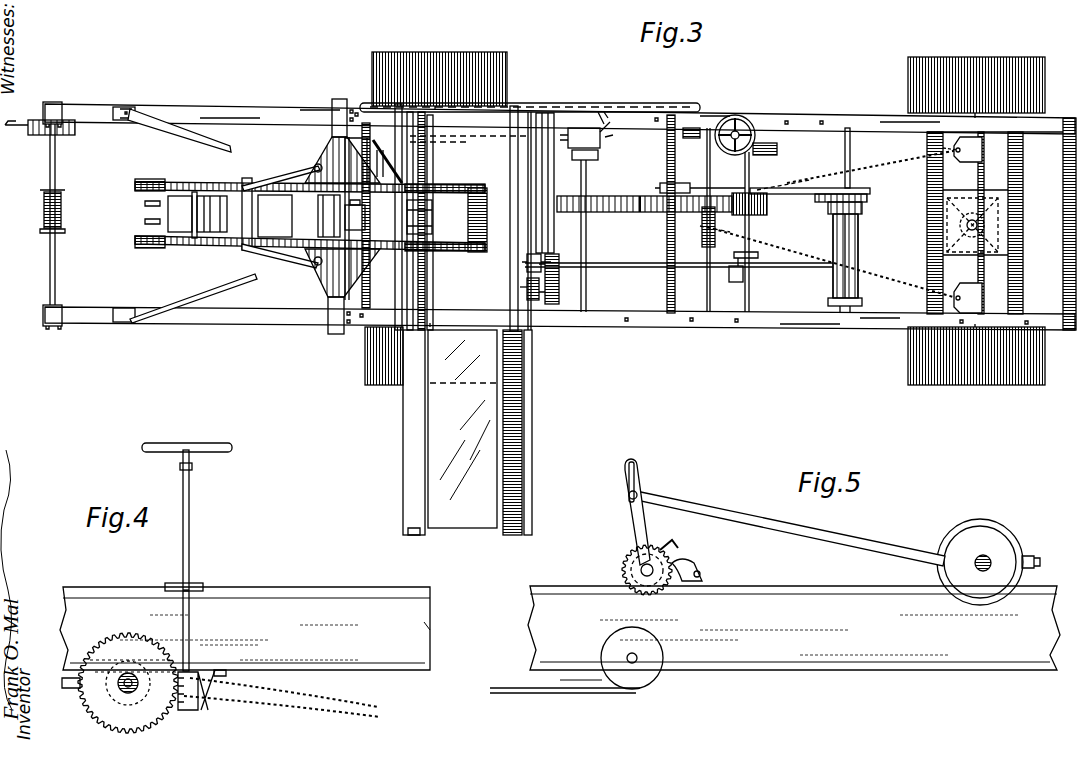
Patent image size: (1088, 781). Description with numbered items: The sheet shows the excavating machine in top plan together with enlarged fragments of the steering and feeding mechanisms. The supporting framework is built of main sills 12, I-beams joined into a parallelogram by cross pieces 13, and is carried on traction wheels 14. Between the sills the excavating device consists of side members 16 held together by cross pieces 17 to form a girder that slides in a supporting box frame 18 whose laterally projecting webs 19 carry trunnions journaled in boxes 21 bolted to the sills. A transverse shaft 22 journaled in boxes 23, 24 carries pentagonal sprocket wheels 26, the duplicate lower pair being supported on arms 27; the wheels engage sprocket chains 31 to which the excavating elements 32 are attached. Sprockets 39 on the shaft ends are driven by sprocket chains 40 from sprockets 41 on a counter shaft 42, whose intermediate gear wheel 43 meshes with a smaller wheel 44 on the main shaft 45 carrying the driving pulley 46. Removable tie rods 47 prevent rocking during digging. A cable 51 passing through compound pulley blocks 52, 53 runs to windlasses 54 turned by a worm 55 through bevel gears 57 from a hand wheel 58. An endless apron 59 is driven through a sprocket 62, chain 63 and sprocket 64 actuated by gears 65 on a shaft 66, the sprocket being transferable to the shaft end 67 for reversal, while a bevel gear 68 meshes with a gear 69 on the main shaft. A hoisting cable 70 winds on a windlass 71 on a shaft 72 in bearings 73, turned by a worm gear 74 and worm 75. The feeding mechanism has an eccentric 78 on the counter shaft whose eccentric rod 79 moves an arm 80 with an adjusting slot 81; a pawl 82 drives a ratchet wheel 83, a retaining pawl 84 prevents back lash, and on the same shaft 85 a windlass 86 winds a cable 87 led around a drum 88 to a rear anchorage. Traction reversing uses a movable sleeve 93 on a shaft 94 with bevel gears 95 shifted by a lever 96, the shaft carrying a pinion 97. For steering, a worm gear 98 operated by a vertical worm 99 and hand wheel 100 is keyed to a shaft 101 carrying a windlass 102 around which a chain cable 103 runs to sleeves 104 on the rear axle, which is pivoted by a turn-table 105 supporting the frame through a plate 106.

In FIG. 3, the main sills 12 is at (228, 107).
In FIG. 4, the main sills 12 is at (338, 598).
In FIG. 5, the main sills 12 is at (838, 594).
In FIG. 3, the cross pieces 13 is at (556, 220).
In FIG. 3, the traction wheels 14 is at (438, 52).
In FIG. 3, the side members 16 is at (180, 214).
In FIG. 3, the cross pieces 17 is at (212, 214).
In FIG. 3, the supporting box or frame 18 is at (275, 216).
In FIG. 3, the laterally projecting webs 19 is at (325, 150).
In FIG. 3, the boxes 21 is at (332, 101).
In FIG. 3, the transverse shaft 22 is at (422, 146).
In FIG. 3, the boxes 23 is at (440, 136).
In FIG. 3, the boxes 24 is at (448, 271).
In FIG. 3, the pentagonal sprocket wheels 26 is at (148, 179).
In FIG. 3, the arms 27 is at (145, 205).
In FIG. 3, the sprocket chains 31 is at (240, 182).
In FIG. 3, the excavating elements 32 is at (246, 250).
In FIG. 3, the sprockets 39 is at (405, 104).
In FIG. 3, the sprocket chains 40 is at (546, 104).
In FIG. 3, the sprockets 41 is at (690, 104).
In FIG. 3, the counter shaft 42 is at (668, 243).
In FIG. 5, the counter shaft 42 is at (977, 570).
In FIG. 3, the intermediate gear wheel 43 is at (648, 212).
In FIG. 3, the smaller wheel 44 is at (768, 214).
In FIG. 3, the main shaft 45 is at (760, 286).
In FIG. 3, the driving pulley 46 is at (776, 154).
In FIG. 3, the tie rods 47 is at (190, 134).
In FIG. 3, the cable 51 is at (280, 176).
In FIG. 3, the compound pulley block 52 is at (314, 167).
In FIG. 3, the compound pulley block 53 is at (235, 182).
In FIG. 3, the windlasses 54 is at (345, 170).
In FIG. 3, the worm 55 is at (330, 216).
In FIG. 3, the bevel gears 57 is at (360, 217).
In FIG. 3, the hand wheel 58 is at (360, 197).
In FIG. 3, the endless apron 59 is at (440, 406).
In FIG. 3, the sprocket 62 is at (539, 432).
In FIG. 3, the chain 63 is at (524, 418).
In FIG. 3, the sprocket 64 is at (523, 288).
In FIG. 3, the gears 65 is at (560, 298).
In FIG. 3, the shaft 66 is at (624, 267).
In FIG. 3, the end of shaft 67 is at (527, 258).
In FIG. 3, the bevel gear 68 is at (735, 282).
In FIG. 3, the gear 69 is at (758, 255).
In FIG. 3, the cable 70 is at (44, 208).
In FIG. 3, the windlass 71 is at (40, 232).
In FIG. 3, the shaft 72 is at (56, 282).
In FIG. 3, the bearings 73 is at (58, 103).
In FIG. 3, the worm gear 74 is at (75, 128).
In FIG. 3, the worm 75 is at (970, 178).
In FIG. 3, the eccentric 78 is at (700, 178).
In FIG. 5, the eccentric 78 is at (1012, 532).
In FIG. 3, the eccentric rod 79 is at (793, 194).
In FIG. 5, the eccentric rod 79 is at (800, 525).
In FIG. 3, the arm 80 is at (866, 190).
In FIG. 5, the arm 80 is at (625, 478).
In FIG. 5, the slot 81 is at (640, 483).
In FIG. 5, the pawl 82 is at (626, 550).
In FIG. 3, the wheel 83 is at (862, 201).
In FIG. 5, the wheel 83 is at (622, 570).
In FIG. 5, the retaining pawl 84 is at (690, 568).
In FIG. 3, the shaft 85 is at (845, 156).
In FIG. 5, the shaft 85 is at (672, 552).
In FIG. 3, the windlass 86 is at (833, 250).
In FIG. 3, the cable 87 is at (833, 226).
In FIG. 5, the cable 87 is at (612, 636).
In FIG. 3, the drum 88 is at (858, 244).
In FIG. 3, the movable sleeve 93 is at (594, 148).
In FIG. 3, the shaft 94 is at (587, 172).
In FIG. 3, the bevel gears 95 is at (588, 97).
In FIG. 3, the lever 96 is at (608, 110).
In FIG. 3, the pinion 97 is at (598, 213).
In FIG. 3, the worm gear 98 is at (691, 142).
In FIG. 4, the worm gear 98 is at (118, 645).
In FIG. 4, the worm 99 is at (212, 705).
In FIG. 3, the hand wheel 100 is at (740, 116).
In FIG. 4, the hand wheel 100 is at (220, 450).
In FIG. 3, the shaft 101 is at (712, 160).
In FIG. 4, the shaft 101 is at (120, 683).
In FIG. 3, the windlass 102 is at (702, 243).
In FIG. 4, the windlass 102 is at (118, 683).
In FIG. 3, the chain cable 103 is at (892, 163).
In FIG. 4, the chain cable 103 is at (292, 716).
In FIG. 3, the sleeves 104 is at (982, 162).
In FIG. 3, the turn-table 105 is at (947, 222).
In FIG. 3, the plate 106 is at (1005, 230).